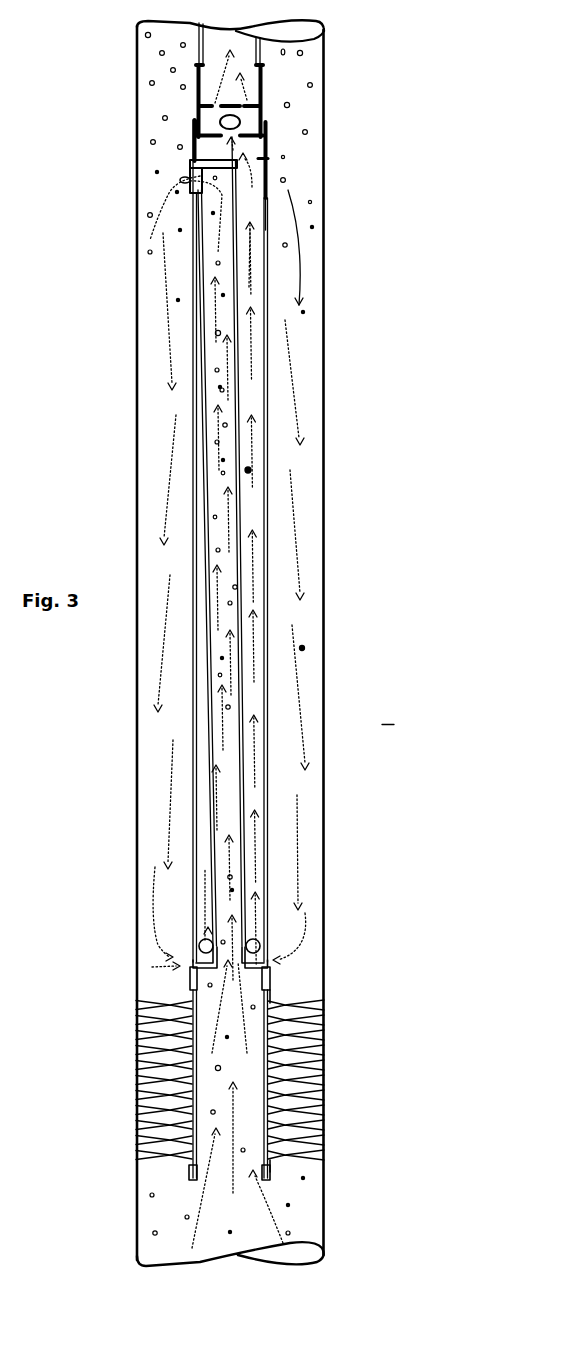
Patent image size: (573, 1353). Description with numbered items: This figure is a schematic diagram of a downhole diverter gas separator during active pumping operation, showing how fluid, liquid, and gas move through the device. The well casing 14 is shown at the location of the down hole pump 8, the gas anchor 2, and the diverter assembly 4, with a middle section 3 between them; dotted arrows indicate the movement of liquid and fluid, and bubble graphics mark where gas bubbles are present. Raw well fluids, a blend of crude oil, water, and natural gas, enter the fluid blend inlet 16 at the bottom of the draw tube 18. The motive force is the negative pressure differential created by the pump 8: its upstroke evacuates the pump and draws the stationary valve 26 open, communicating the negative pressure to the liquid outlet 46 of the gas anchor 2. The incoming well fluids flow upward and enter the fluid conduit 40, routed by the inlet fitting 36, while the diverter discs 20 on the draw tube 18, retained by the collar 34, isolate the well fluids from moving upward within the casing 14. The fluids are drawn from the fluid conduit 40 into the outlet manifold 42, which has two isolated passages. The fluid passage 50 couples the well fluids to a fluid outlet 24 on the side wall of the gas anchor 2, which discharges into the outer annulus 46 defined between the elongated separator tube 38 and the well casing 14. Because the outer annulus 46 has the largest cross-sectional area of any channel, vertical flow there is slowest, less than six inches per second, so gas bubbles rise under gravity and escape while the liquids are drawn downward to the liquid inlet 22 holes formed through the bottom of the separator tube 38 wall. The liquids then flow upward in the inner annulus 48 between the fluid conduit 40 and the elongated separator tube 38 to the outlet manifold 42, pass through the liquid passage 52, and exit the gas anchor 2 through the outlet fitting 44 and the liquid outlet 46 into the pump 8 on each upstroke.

The gas anchor 2 is at (357, 353).
The middle section 3 is at (388, 714).
The diverter assembly 4 is at (382, 1061).
The down hole pump 8 is at (202, 58).
The well casing 14 is at (134, 378).
The fluid blend inlet 16 is at (198, 1179).
The draw tube 18 is at (272, 997).
The diverter discs 20 is at (143, 1123).
The liquid inlet 22 is at (272, 955).
The fluid outlet 24 is at (190, 175).
The stationary valve 26 is at (221, 119).
The collar 34 is at (190, 1171).
The inlet fitting 36 is at (272, 978).
The elongated separator tube 38 is at (192, 775).
The fluid conduit 40 is at (210, 684).
The outlet manifold 42 is at (273, 197).
The outlet fitting 44 is at (193, 142).
The liquid outlet 46 is at (242, 146).
The inner annulus 48 is at (250, 469).
The fluid passage 50 is at (190, 180).
The liquid passage 52 is at (263, 216).